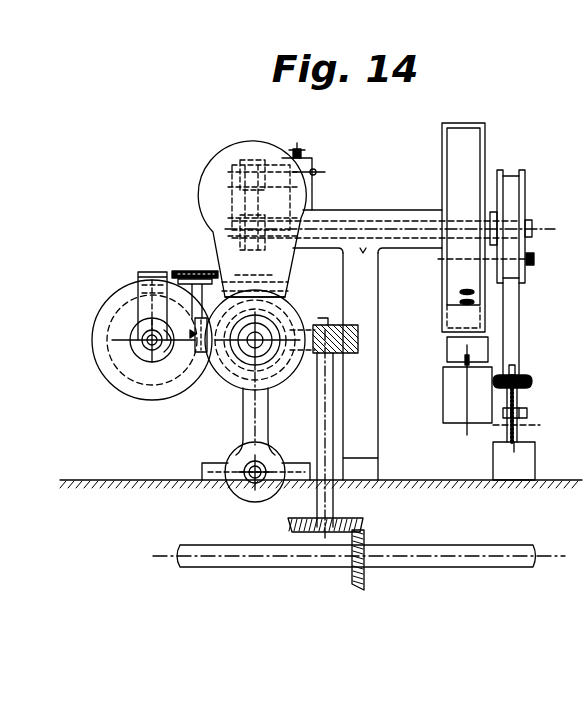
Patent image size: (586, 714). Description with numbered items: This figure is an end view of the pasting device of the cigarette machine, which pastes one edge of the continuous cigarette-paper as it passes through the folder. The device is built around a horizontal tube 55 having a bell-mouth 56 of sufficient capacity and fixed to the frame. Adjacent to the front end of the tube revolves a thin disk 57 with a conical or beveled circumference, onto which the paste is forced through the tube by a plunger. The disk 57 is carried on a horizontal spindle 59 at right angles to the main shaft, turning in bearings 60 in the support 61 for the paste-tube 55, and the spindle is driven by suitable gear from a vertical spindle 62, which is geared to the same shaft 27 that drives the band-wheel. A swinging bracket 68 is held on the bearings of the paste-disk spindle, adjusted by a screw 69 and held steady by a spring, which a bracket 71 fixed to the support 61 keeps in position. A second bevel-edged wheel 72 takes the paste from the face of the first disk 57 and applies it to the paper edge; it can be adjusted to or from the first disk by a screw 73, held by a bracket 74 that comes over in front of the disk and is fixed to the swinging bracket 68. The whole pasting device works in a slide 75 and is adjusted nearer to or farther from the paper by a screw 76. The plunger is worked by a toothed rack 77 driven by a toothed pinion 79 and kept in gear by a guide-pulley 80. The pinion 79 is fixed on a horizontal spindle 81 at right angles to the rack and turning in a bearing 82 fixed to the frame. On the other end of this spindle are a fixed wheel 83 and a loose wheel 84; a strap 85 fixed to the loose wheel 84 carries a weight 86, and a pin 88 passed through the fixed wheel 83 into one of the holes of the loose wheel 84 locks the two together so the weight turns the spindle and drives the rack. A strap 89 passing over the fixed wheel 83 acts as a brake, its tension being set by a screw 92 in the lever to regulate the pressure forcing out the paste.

The shaft 27 is at (435, 544).
The horizontal tube 55 is at (210, 171).
The bell-mouth 56 is at (288, 266).
The thin disk 57 is at (224, 396).
The horizontal spindle 59 is at (262, 352).
The bearings 60 is at (272, 348).
The support 61 is at (242, 434).
The vertical spindle 62 is at (334, 414).
The swinging bracket 68 is at (170, 356).
The screw 69 is at (185, 271).
The bracket 71 is at (215, 275).
The second bevel-edged wheel 72 is at (137, 396).
The screw 73 is at (140, 335).
The bracket 74 is at (138, 272).
The slide 75 is at (291, 463).
The screw 76 is at (249, 483).
The toothed rack 77 is at (250, 200).
The toothed pinion 79 is at (258, 284).
The guide-pulley 80 is at (246, 158).
The horizontal spindle 81 is at (375, 222).
The bearing 82 is at (379, 303).
The fixed wheel 83 is at (525, 176).
The loose wheel 84 is at (442, 148).
The strap 85 is at (447, 349).
The weight 86 is at (445, 398).
The pin 88 is at (533, 262).
The strap 89 is at (522, 321).
The screw 92 is at (520, 398).